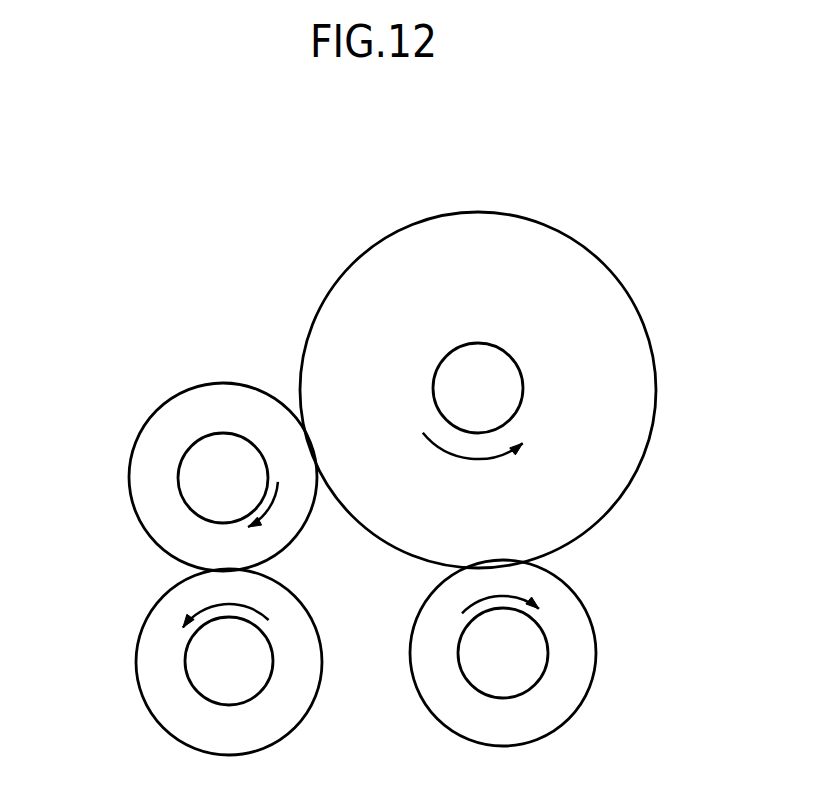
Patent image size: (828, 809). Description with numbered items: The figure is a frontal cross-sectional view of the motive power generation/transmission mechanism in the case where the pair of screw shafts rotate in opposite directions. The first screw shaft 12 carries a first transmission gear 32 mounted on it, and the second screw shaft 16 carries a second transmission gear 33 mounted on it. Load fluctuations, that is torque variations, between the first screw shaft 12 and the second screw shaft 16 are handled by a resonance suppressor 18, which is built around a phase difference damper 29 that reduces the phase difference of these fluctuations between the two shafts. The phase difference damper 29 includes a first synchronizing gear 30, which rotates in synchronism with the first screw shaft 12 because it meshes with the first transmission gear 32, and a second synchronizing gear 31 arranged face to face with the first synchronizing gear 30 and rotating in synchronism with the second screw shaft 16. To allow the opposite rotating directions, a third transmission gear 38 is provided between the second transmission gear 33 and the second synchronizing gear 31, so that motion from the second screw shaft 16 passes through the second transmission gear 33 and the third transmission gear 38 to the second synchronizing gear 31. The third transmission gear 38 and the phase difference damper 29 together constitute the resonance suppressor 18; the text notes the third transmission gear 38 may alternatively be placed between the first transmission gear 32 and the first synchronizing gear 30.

The first screw shaft 12 is at (547, 638).
The second screw shaft 16 is at (185, 678).
The resonance suppressor 18 is at (237, 345).
The phase difference damper 29 is at (382, 238).
The first synchronizing gear 30 is at (625, 283).
The second synchronizing gear 31 is at (550, 248).
The first transmission gear 32 is at (578, 688).
The second transmission gear 33 is at (175, 716).
The third transmission gear 38 is at (142, 460).